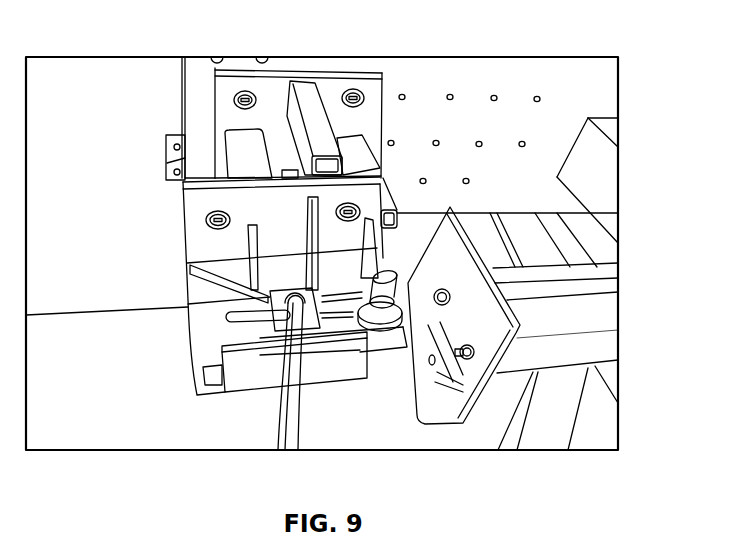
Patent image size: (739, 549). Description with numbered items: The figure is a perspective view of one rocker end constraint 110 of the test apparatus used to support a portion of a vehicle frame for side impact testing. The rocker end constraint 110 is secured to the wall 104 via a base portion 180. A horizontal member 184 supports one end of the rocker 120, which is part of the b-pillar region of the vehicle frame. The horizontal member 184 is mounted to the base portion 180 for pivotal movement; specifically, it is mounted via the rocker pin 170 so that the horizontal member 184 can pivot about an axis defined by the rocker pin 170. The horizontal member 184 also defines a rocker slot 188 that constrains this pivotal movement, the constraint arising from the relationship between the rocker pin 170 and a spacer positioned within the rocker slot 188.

The wall 104 is at (550, 84).
The rocker end constraint 110 is at (180, 410).
The rocker 120 is at (582, 310).
The rocker pin 170 is at (410, 420).
The base portion 180 is at (353, 150).
The horizontal member 184 is at (247, 375).
The rocker slot 188 is at (371, 318).